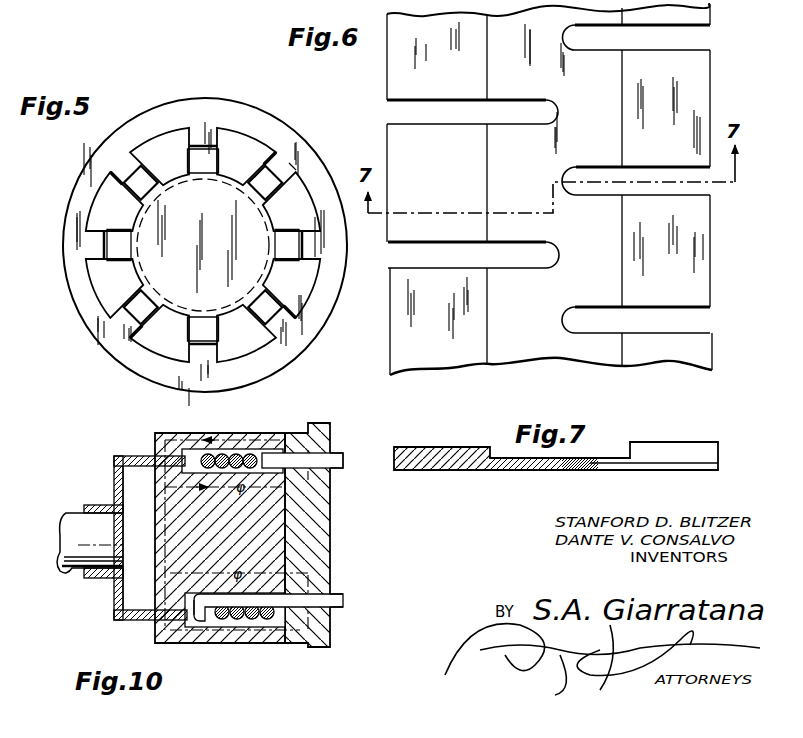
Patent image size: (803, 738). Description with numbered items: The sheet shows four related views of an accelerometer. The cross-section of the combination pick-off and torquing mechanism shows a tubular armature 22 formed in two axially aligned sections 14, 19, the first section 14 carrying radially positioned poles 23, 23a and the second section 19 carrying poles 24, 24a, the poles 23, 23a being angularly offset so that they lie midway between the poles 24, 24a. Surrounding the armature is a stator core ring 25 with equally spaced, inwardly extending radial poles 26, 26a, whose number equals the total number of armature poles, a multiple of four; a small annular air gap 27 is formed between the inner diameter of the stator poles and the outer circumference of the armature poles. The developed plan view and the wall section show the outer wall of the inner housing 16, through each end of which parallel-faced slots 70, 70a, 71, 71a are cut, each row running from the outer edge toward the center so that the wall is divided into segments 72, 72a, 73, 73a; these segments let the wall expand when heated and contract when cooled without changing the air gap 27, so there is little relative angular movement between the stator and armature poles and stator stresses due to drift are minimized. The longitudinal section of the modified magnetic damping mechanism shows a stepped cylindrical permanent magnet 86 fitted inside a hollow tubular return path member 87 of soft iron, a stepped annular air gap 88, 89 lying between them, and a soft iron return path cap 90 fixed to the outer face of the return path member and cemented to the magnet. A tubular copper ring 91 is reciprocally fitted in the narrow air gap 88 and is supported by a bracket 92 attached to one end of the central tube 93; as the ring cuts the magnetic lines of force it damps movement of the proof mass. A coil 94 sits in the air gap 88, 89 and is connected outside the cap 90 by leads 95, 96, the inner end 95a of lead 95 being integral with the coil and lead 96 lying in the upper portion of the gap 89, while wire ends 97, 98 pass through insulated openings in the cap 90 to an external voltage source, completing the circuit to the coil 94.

In FIG. 5, the armature section 14 is at (270, 201).
In FIG. 5, the armature section 19 is at (284, 256).
In FIG. 5, the tubular armature 22 is at (150, 258).
In FIG. 5, the armature pole 23 is at (150, 180).
In FIG. 5, the armature pole 23a is at (272, 168).
In FIG. 5, the armature pole 24 is at (118, 240).
In FIG. 5, the armature pole 24a is at (207, 160).
In FIG. 5, the stator core ring 25 is at (118, 354).
In FIG. 5, the stator pole 26 is at (212, 356).
In FIG. 5, the stator pole 26a is at (290, 323).
In FIG. 5, the annular air gap 27 is at (258, 322).
In FIG. 6, the inner housing 16 is at (452, 366).
In FIG. 6, the slot 70 is at (438, 258).
In FIG. 6, the slot 70a is at (445, 120).
In FIG. 6, the slot 71 is at (705, 320).
In FIG. 6, the slot 71a is at (740, 30).
In FIG. 6, the wall segment 72 is at (397, 333).
In FIG. 7, the wall segment 72 is at (405, 455).
In FIG. 6, the wall segment 72a is at (395, 158).
In FIG. 6, the wall segment 73 is at (702, 250).
In FIG. 6, the wall segment 73a is at (702, 92).
In FIG. 10, the cylindrical permanent magnet 86 is at (277, 521).
In FIG. 10, the tubular return path member 87 is at (210, 437).
In FIG. 10, the annular air gap 88 is at (168, 478).
In FIG. 10, the annular air gap 89 is at (262, 452).
In FIG. 10, the return path cap 90 is at (318, 533).
In FIG. 10, the tubular copper ring 91 is at (142, 462).
In FIG. 10, the bracket 92 is at (113, 581).
In FIG. 10, the central tube 93 is at (70, 570).
In FIG. 10, the coil 94 is at (238, 616).
In FIG. 10, the lead 95 is at (270, 600).
In FIG. 10, the inner end of lead 95a is at (210, 612).
In FIG. 10, the second lead 96 is at (270, 453).
In FIG. 10, the wire outer end 97 is at (343, 598).
In FIG. 10, the wire outer end 98 is at (330, 458).